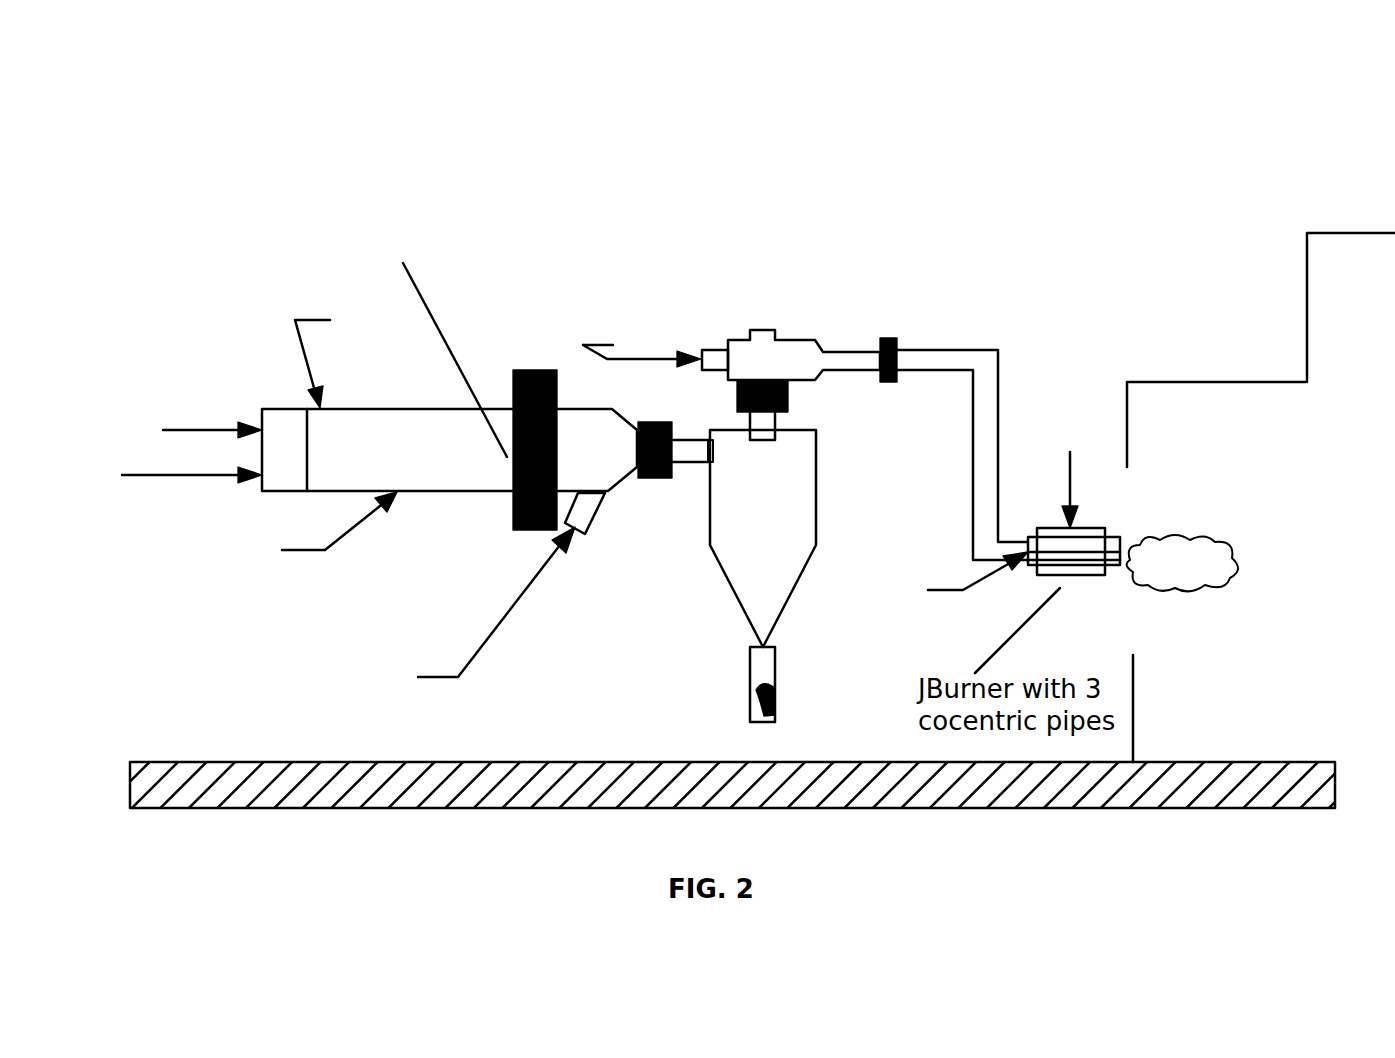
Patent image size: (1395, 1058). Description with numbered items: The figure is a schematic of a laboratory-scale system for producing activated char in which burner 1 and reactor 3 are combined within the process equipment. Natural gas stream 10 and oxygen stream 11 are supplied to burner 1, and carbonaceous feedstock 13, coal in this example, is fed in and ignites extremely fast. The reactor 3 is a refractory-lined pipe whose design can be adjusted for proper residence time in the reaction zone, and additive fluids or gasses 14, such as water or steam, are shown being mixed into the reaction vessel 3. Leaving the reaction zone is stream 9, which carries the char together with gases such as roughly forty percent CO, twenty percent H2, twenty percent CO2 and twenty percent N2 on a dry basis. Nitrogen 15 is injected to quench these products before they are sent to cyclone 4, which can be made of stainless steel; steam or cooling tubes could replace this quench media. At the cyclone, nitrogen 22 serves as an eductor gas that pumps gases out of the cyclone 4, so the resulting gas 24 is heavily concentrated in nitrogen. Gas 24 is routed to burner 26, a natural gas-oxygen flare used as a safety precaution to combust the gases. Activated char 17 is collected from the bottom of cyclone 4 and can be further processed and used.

The burner 1 is at (293, 472).
The reactor 3 is at (397, 472).
The stream 9 is at (412, 286).
The natural gas stream 10 is at (212, 480).
The oxygen stream 11 is at (223, 427).
The carbonaceous feedstock 13 is at (309, 320).
The additive fluids or gasses 14 is at (355, 522).
The nitrogen 15 is at (508, 615).
The nitrogen 22 is at (632, 362).
The cyclone 4 is at (710, 527).
The activated char 17 is at (750, 697).
The gas 24 is at (980, 315).
The burner 26 is at (1047, 527).